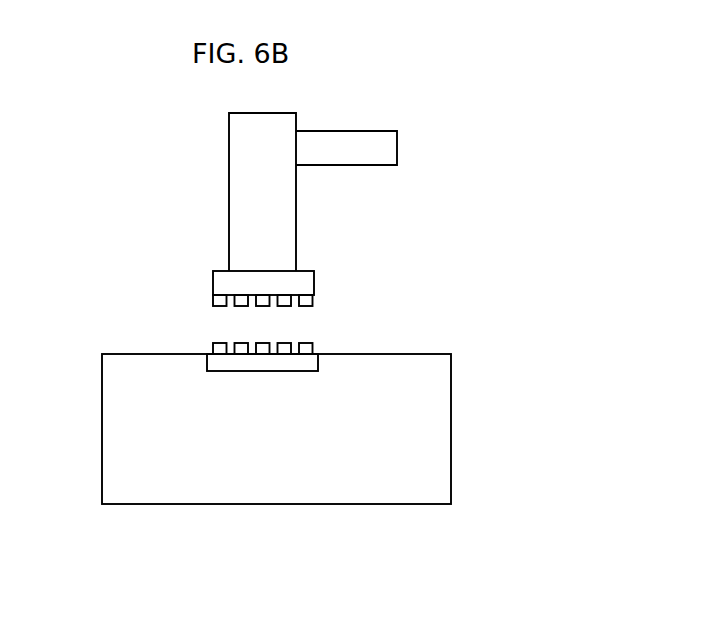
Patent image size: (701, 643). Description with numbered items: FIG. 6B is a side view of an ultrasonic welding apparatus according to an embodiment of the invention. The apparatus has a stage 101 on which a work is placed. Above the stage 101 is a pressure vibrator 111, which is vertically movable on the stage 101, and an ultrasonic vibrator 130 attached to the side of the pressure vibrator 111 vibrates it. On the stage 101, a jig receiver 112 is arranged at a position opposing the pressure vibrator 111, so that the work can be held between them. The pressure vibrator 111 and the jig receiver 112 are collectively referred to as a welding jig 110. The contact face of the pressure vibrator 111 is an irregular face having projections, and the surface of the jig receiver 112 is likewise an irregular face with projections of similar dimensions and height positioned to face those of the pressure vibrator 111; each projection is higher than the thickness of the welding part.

The stage 101 is at (445, 426).
The welding jig 110 is at (121, 248).
The pressure vibrator 111 is at (215, 279).
The jig receiver 112 is at (212, 363).
The ultrasonic vibrator 130 is at (392, 150).